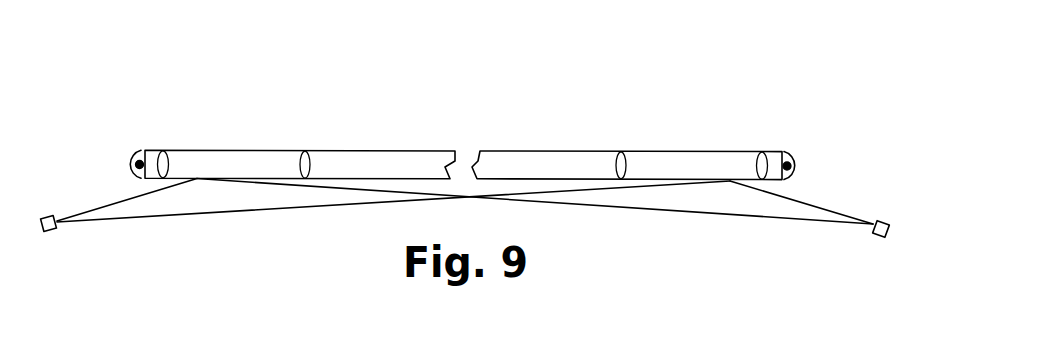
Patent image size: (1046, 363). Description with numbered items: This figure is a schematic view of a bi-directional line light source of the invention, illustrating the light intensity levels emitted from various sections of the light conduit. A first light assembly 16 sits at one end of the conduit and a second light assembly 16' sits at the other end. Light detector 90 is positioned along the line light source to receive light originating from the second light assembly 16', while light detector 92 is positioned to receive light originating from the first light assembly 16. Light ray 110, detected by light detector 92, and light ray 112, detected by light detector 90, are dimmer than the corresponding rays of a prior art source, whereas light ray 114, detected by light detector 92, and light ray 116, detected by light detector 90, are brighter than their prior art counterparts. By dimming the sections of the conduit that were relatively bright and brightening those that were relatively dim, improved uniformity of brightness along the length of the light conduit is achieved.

The first light assembly 16 is at (278, 138).
The second light assembly 16' is at (653, 146).
The light detector 90 is at (47, 232).
The light detector 92 is at (880, 238).
The light ray 110 is at (695, 213).
The light ray 112 is at (210, 214).
The light ray 114 is at (797, 200).
The light ray 116 is at (133, 197).